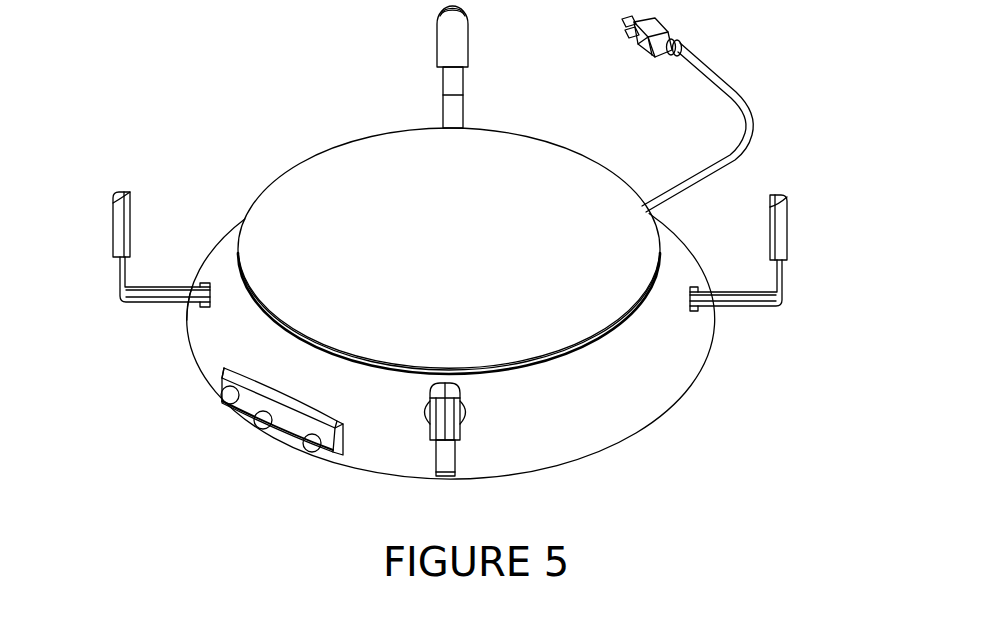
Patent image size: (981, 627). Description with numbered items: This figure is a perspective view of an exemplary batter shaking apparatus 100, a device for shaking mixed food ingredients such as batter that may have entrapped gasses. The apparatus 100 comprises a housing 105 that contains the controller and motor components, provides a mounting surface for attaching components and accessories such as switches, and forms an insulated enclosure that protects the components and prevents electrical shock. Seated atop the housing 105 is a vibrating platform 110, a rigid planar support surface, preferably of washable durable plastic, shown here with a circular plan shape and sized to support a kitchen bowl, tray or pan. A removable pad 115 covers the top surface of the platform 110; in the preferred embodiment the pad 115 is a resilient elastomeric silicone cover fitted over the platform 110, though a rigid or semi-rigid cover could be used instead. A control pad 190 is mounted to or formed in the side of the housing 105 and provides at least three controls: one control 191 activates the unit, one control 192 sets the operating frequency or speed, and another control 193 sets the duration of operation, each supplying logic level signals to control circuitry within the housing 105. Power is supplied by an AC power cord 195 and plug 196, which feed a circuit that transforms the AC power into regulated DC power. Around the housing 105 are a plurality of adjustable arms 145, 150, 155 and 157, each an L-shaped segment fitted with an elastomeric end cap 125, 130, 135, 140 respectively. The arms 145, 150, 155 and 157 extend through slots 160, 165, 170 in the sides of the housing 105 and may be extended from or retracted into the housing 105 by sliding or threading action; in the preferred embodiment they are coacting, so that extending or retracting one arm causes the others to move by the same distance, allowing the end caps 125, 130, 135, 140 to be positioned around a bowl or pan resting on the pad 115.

The batter shaking apparatus 100 is at (642, 440).
The housing 105 is at (667, 378).
The vibrating platform 110 is at (588, 352).
The removable pad 115 is at (315, 195).
The elastomeric end cap 125 is at (440, 430).
The elastomeric end cap 130 is at (120, 215).
The elastomeric end cap 135 is at (778, 200).
The elastomeric end cap 140 is at (452, 32).
The adjustable arm 145 is at (448, 465).
The adjustable arm 150 is at (167, 295).
The adjustable arm 155 is at (715, 302).
The adjustable arm 157 is at (452, 85).
The slot 160 is at (462, 415).
The slot 165 is at (203, 306).
The slot 170 is at (692, 300).
The control pad 190 is at (262, 430).
The control 191 is at (225, 398).
The control 192 is at (288, 430).
The control 193 is at (312, 452).
The AC power cord 195 is at (708, 72).
The plug 196 is at (645, 52).